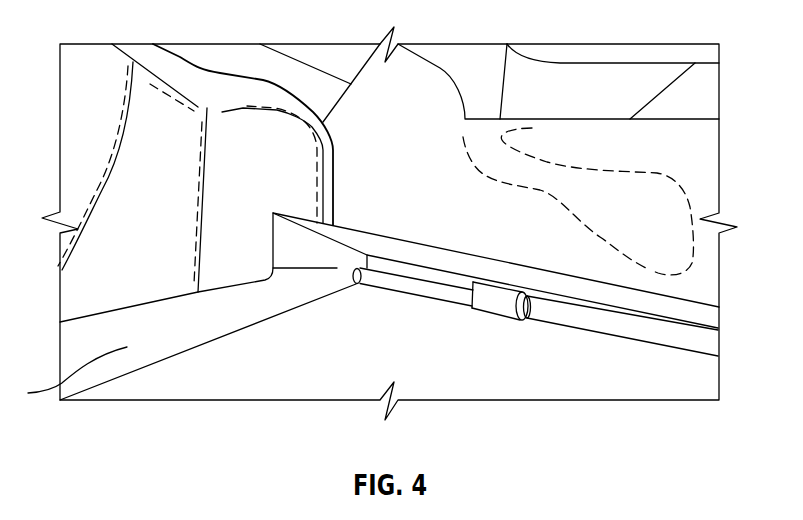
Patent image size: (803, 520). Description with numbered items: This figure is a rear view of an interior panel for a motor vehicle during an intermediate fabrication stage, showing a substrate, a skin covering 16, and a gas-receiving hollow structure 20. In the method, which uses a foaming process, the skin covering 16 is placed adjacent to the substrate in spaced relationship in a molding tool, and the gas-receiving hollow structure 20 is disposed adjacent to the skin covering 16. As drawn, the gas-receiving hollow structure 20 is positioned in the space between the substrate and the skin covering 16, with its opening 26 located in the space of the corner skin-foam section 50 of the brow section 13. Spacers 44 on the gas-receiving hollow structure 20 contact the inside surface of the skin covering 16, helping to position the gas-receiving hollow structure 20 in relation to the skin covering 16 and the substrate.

The brow section 13 is at (656, 249).
The skin covering 16 is at (380, 360).
The gas-receiving hollow structure 20 is at (595, 321).
The opening 26 is at (345, 275).
The spacers 44 is at (497, 317).
The corner skin-foam section 50 is at (63, 380).